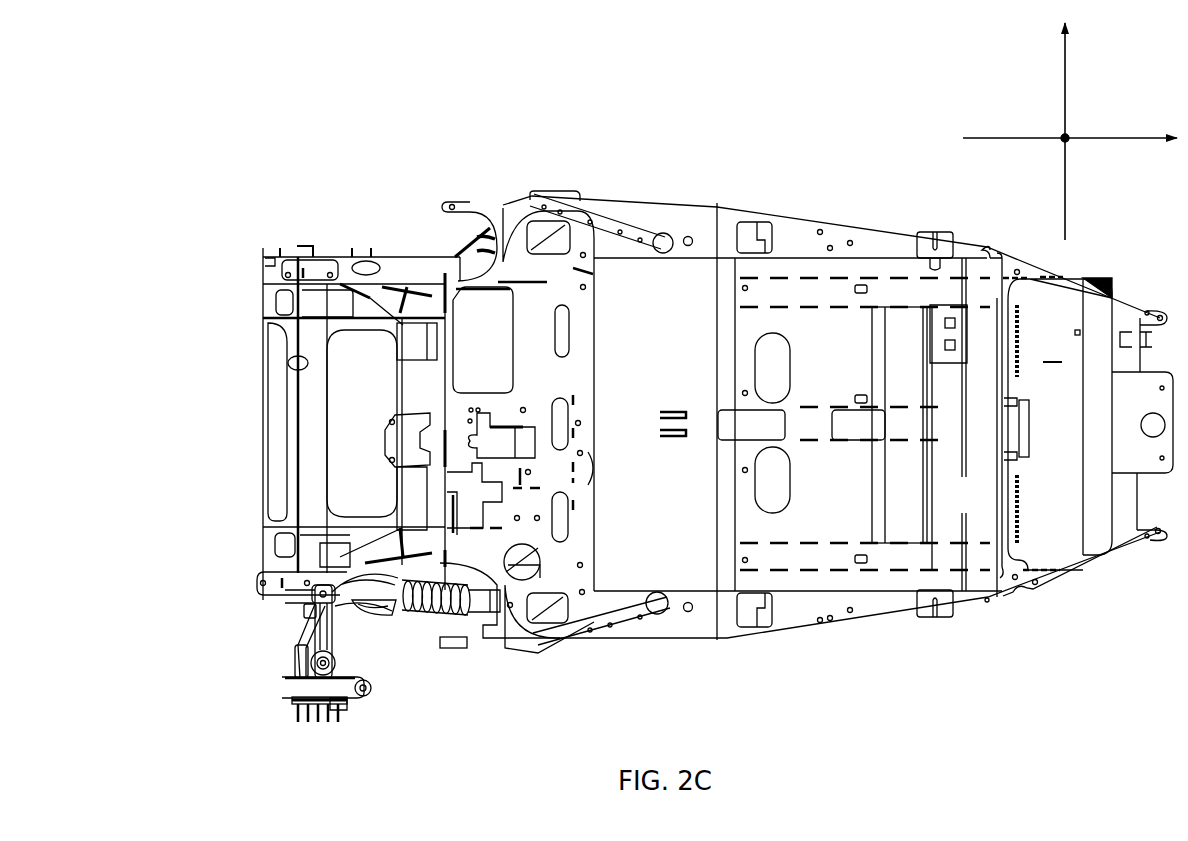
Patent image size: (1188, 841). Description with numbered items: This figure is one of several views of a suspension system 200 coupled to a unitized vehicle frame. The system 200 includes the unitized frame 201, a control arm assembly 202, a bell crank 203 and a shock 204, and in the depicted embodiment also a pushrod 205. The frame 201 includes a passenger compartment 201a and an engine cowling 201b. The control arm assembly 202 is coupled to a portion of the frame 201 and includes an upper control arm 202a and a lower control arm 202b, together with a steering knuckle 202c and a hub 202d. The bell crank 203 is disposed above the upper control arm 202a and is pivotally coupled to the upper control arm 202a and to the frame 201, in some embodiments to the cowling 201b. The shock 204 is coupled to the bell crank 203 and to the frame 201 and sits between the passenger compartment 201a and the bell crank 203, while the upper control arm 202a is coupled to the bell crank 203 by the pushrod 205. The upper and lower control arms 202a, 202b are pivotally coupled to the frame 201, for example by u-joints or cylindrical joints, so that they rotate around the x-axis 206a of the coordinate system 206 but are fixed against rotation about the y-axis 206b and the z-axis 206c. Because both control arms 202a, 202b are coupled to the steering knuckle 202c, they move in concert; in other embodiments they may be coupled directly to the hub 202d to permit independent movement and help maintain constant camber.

The system 200 is at (289, 79).
The unitized frame 201 is at (701, 170).
The passenger compartment 201a is at (656, 402).
The engine cowling 201b is at (405, 255).
The control arm assembly 202 is at (364, 659).
The upper control arm 202a is at (300, 625).
The lower control arm 202b is at (300, 663).
The steering knuckle 202c is at (293, 678).
The hub 202d is at (342, 704).
The bell crank 203 is at (374, 626).
The shock 204 is at (433, 619).
The pushrod 205 is at (305, 612).
The coordinate system 206 is at (912, 97).
The x-axis 206a is at (975, 140).
The y-axis 206b is at (1068, 137).
The z-axis 206c is at (1068, 217).